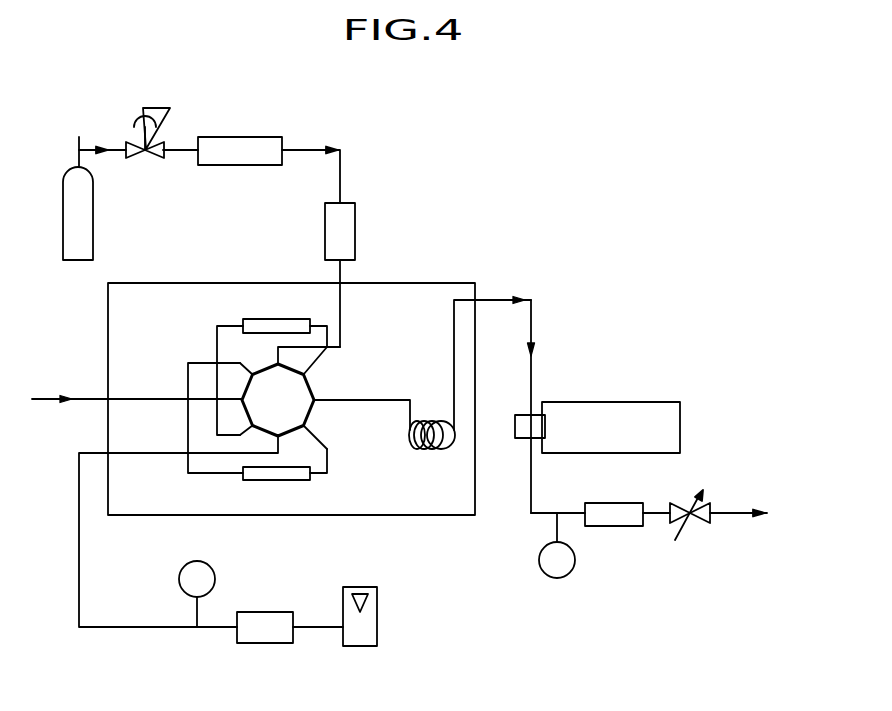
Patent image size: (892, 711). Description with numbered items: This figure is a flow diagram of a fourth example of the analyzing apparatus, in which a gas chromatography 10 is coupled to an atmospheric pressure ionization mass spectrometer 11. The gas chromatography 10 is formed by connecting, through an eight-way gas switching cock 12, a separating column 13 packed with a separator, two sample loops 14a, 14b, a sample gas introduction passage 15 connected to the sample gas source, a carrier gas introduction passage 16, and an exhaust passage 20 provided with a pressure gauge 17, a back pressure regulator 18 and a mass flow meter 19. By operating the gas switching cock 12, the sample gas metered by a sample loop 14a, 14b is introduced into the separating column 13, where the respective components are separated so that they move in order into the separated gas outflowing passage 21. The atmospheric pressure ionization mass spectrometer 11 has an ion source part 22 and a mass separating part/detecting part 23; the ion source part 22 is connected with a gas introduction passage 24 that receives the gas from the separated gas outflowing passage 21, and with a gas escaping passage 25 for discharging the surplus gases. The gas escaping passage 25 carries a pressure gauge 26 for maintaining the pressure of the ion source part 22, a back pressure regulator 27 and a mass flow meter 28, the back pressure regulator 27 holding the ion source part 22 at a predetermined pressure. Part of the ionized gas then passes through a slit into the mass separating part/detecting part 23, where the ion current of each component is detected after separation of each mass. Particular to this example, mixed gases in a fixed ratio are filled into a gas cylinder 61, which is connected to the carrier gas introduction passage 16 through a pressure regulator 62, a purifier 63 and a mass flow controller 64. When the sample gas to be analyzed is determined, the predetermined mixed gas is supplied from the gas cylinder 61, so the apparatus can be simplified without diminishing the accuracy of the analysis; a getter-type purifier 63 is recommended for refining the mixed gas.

The gas chromatography 10 is at (438, 268).
The atmospheric pressure ionization mass spectrometer 11 is at (697, 413).
The 8 way gas switching cock 12 is at (311, 385).
The separating column 13 is at (433, 452).
The sample loop 14a is at (257, 319).
The sample loop 14b is at (265, 481).
The sample gas introduction passage 15 is at (152, 398).
The carrier gas introduction passage 16 is at (341, 305).
The pressure gauge 17 is at (179, 566).
The back pressure regulator 18 is at (273, 612).
The mass flow meter 19 is at (378, 615).
The exhaust passage 20 is at (177, 452).
The separated gas outflowing passage 21 is at (453, 350).
The ion source part 22 is at (520, 440).
The mass separating part/detecting part 23 is at (610, 402).
The gas introduction passage 24 is at (532, 322).
The gas escaping passage 25 is at (533, 493).
The pressure gauge 26 is at (545, 575).
The back pressure regulator 27 is at (613, 527).
The mass flow meter 28 is at (700, 526).
The gas cylinder 61 is at (95, 241).
The pressure regulator 62 is at (136, 158).
The purifier 63 is at (257, 166).
The mass flow controller 64 is at (356, 213).